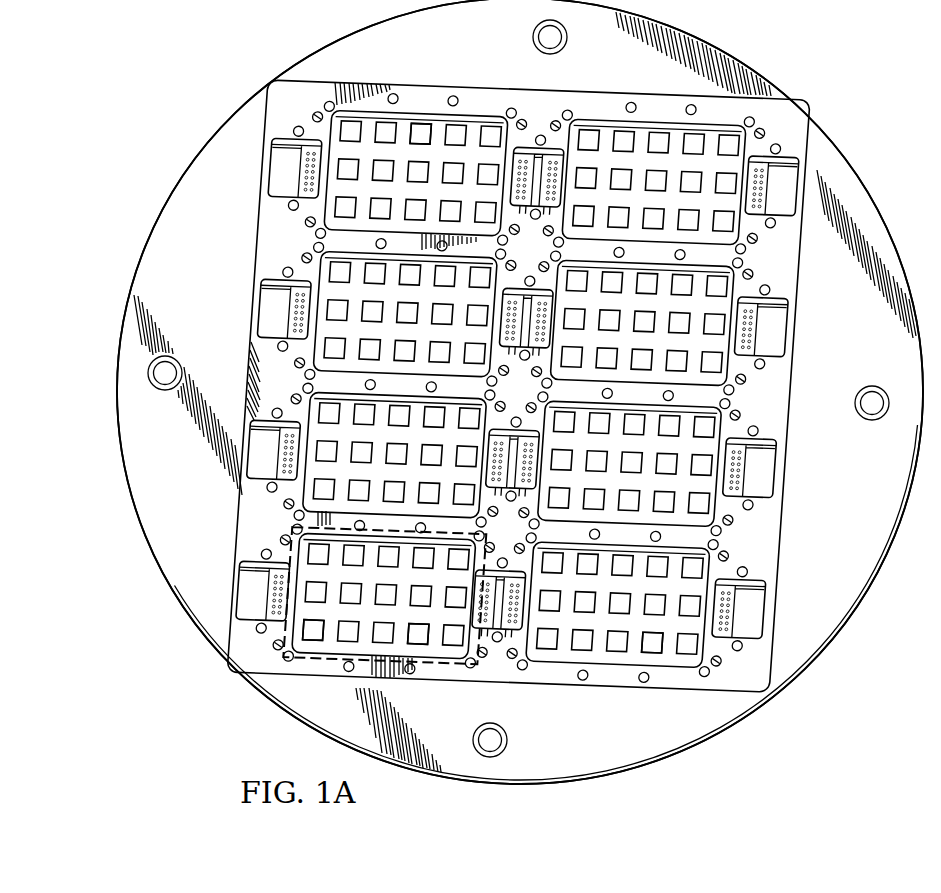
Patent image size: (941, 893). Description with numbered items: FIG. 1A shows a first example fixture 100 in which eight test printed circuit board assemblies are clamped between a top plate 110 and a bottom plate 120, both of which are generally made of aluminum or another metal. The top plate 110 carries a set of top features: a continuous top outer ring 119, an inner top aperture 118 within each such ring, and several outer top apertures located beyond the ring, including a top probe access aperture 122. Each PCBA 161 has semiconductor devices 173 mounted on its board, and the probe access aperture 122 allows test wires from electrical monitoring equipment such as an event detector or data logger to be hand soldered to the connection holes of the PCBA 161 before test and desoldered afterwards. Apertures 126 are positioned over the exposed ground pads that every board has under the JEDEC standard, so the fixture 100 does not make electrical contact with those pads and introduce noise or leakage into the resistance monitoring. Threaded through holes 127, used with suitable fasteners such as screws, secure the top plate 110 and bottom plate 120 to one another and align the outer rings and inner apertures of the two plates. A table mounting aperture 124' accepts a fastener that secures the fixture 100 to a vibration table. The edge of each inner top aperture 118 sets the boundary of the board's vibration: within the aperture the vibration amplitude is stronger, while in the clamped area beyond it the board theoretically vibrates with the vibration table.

The fixture 100 is at (212, 50).
The top plate 110 is at (257, 246).
The bottom plate 120 is at (152, 264).
The table mounting aperture 124' is at (875, 379).
The top probe access aperture 122 is at (250, 594).
The apertures 126 is at (733, 556).
The inner top aperture 118 is at (420, 622).
The top outer ring 119 is at (326, 662).
The semiconductor devices 173 is at (421, 124).
The PCBA 161 is at (494, 644).
The threaded through holes 127 is at (579, 680).